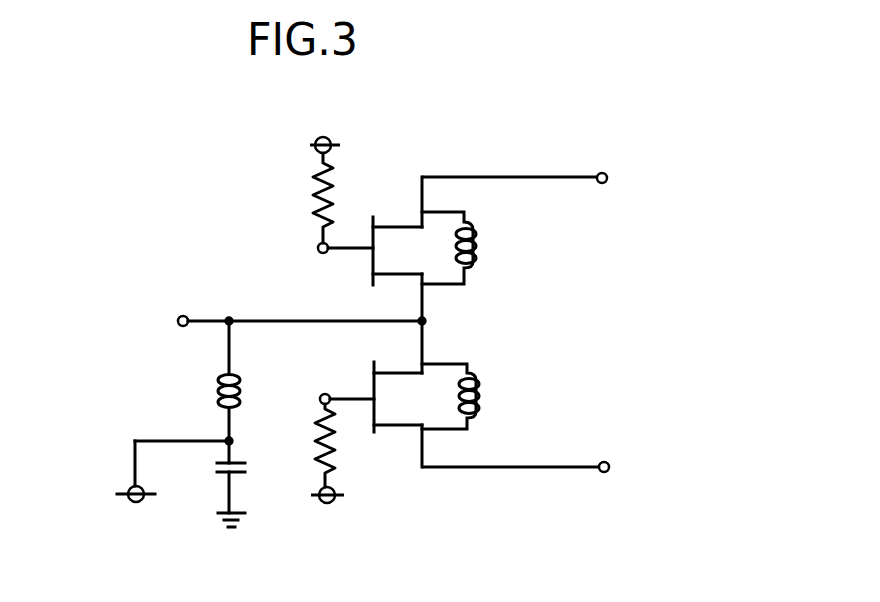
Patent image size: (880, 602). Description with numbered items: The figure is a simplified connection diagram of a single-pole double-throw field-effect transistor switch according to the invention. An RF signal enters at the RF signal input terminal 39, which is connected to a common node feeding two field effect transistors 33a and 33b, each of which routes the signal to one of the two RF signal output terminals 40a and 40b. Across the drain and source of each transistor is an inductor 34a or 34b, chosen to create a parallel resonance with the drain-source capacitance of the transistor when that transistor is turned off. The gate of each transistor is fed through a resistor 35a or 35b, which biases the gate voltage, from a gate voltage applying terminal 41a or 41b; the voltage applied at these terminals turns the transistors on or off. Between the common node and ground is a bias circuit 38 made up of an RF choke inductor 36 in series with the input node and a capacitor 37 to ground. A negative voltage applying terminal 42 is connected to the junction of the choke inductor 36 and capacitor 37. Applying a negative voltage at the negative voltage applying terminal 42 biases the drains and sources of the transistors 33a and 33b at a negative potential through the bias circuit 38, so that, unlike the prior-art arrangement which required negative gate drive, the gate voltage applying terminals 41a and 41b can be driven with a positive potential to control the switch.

The field effect transistor 33a is at (398, 227).
The field effect transistor 33b is at (388, 428).
The inductor 34a is at (478, 222).
The inductor 34b is at (483, 412).
The resistor 35a is at (305, 198).
The resistor 35b is at (312, 460).
The RF choke inductor 36 is at (212, 394).
The capacitor 37 is at (212, 462).
The bias circuit 38 is at (137, 424).
The RF signal input terminal 39 is at (171, 315).
The RF signal output terminal 40a is at (608, 175).
The RF signal output terminal 40b is at (620, 465).
The gate voltage applying terminal 41a is at (307, 147).
The gate voltage applying terminal 41b is at (330, 505).
The negative voltage applying terminal 42 is at (133, 505).